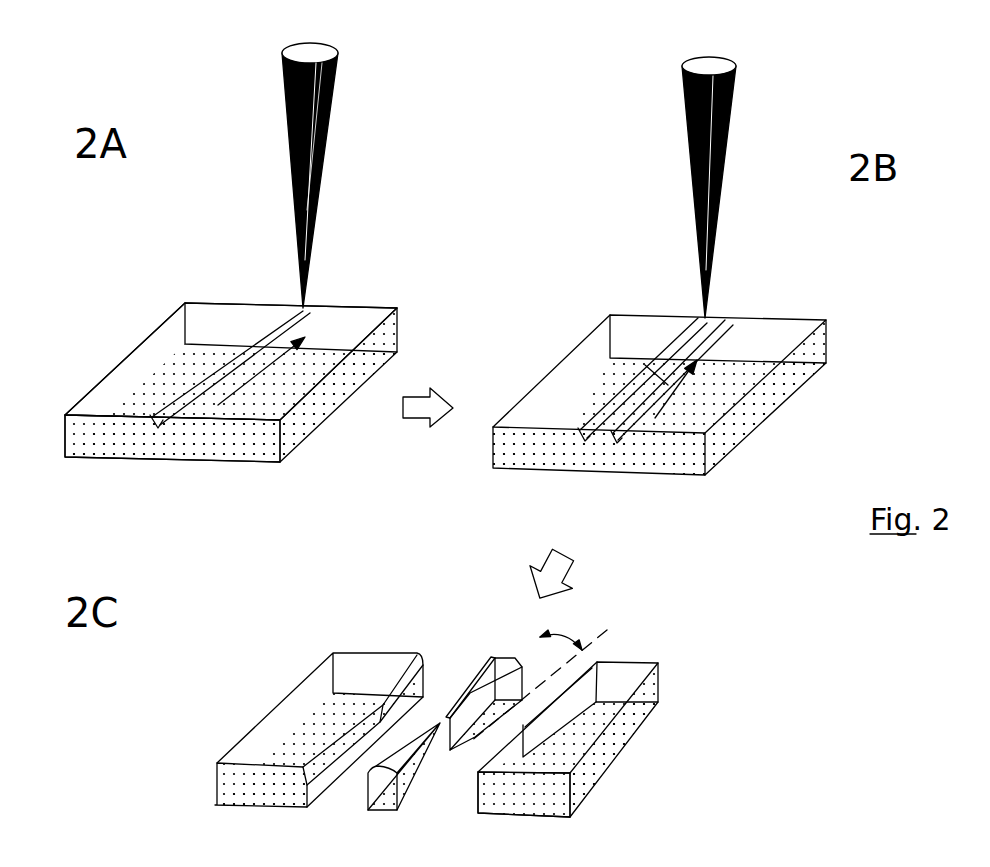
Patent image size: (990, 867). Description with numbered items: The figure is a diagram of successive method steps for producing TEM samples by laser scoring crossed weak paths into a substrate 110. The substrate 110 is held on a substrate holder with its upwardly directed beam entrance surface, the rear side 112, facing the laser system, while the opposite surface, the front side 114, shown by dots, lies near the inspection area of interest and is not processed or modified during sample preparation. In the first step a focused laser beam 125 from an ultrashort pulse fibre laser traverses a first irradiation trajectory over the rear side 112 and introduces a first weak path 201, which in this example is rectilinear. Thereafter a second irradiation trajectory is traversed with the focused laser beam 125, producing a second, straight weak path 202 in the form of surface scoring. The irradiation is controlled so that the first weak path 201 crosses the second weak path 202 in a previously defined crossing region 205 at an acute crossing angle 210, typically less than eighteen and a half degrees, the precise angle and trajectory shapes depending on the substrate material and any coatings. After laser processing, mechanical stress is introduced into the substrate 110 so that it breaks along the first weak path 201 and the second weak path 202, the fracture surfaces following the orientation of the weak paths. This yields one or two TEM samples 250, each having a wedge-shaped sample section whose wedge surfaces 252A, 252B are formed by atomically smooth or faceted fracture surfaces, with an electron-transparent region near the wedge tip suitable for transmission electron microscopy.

The substrate 110 is at (392, 335).
The rear side 112 is at (371, 315).
The front side 114 is at (342, 407).
The focused laser beam 125 is at (330, 127).
The first weak path 201 is at (275, 323).
The second weak path 202 is at (690, 318).
The crossing region 205 is at (658, 353).
The crossing angle 210 is at (560, 633).
The TEM sample 250 is at (505, 655).
The wedge surface 252A is at (453, 710).
The wedge surface 252B is at (461, 725).